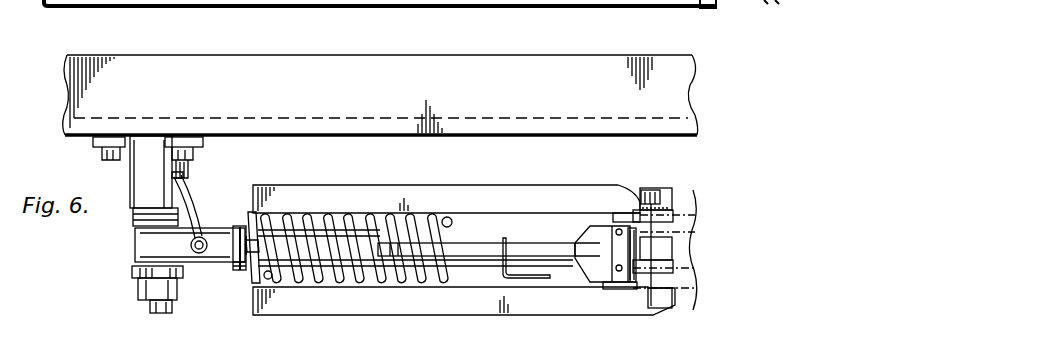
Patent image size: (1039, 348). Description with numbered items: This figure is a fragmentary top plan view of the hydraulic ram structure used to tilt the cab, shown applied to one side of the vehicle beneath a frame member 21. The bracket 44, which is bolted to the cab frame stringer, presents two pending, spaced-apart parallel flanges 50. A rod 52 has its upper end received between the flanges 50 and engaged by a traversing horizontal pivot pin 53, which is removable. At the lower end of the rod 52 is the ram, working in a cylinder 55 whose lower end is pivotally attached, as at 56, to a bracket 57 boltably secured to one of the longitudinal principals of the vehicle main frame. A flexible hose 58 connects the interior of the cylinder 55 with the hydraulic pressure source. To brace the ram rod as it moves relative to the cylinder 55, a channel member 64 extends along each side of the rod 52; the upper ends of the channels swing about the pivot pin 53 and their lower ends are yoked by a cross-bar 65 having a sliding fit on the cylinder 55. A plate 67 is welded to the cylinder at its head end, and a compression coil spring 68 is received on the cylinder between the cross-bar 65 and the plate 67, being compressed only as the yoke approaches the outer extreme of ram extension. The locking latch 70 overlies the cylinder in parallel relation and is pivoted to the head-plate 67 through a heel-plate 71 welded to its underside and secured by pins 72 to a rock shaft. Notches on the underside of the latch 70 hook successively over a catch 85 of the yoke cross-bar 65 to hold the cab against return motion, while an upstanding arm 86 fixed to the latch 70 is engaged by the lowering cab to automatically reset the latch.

The beam 21 is at (398, 68).
The bracket 44 is at (686, 312).
The flanges 50 is at (688, 218).
The rod 52 is at (666, 247).
The pivot pin 53 is at (653, 193).
The cylinder 55 is at (240, 270).
The pivotal attachment 56 is at (160, 313).
The bracket 57 is at (138, 193).
The flexible hose 58 is at (196, 201).
The channel member 64 is at (351, 195).
The cross-bar 65 is at (250, 286).
The plate 67 is at (607, 286).
The compression coil spring 68 is at (445, 219).
The locking latch 70 is at (465, 247).
The heel-plate 71 is at (590, 264).
The pins 72 is at (615, 229).
The catch 85 is at (247, 216).
The upstanding arm 86 is at (522, 280).